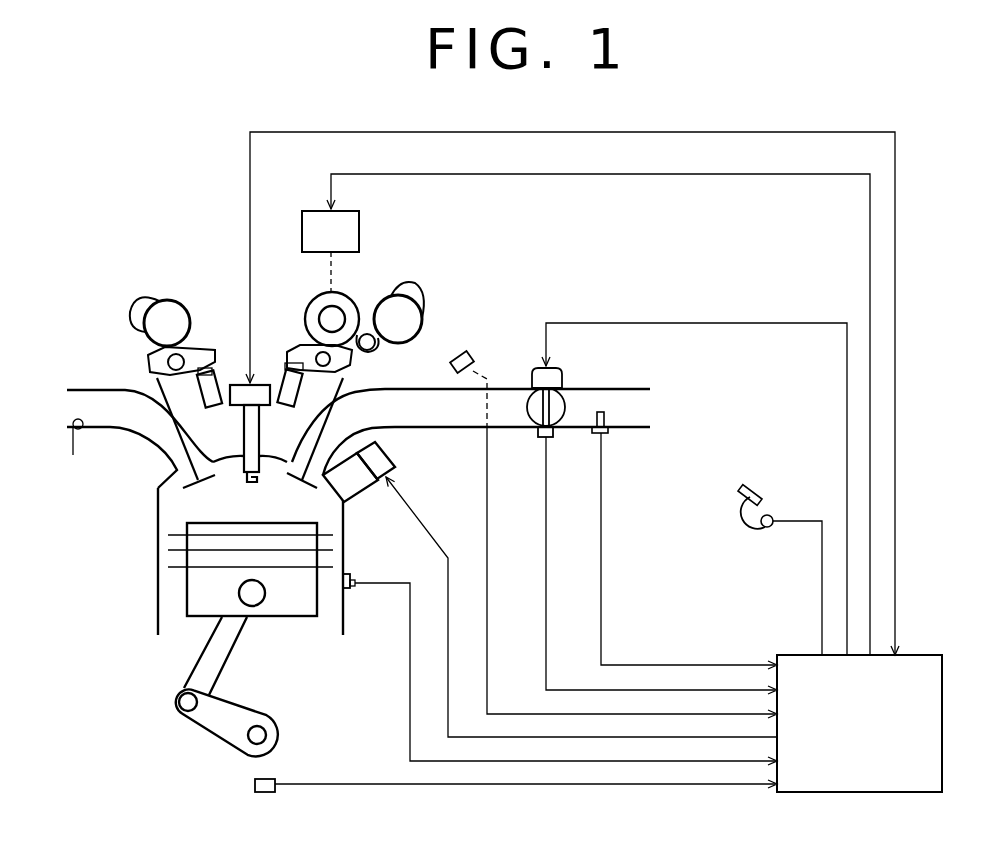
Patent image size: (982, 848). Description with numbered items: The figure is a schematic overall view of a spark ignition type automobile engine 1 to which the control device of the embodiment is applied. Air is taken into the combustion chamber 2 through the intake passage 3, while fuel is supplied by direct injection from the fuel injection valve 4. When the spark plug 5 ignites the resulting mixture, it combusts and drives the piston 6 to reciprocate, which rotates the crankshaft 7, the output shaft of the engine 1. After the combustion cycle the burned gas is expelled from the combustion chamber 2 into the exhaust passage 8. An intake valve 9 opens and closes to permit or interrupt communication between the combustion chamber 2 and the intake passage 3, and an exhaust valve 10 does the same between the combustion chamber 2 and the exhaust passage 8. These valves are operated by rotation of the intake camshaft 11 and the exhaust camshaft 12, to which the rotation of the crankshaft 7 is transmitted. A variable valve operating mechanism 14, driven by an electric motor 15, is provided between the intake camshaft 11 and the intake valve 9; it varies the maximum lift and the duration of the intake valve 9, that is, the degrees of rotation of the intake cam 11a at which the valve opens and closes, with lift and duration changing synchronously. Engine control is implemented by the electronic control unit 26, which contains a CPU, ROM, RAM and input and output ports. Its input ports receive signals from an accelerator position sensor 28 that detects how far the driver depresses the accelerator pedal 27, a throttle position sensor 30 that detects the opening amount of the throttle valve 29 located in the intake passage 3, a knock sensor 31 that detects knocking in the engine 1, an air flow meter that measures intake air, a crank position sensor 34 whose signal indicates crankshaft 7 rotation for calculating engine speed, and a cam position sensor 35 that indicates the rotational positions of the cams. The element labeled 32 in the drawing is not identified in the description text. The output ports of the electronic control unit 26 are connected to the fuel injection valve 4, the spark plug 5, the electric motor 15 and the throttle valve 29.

The engine 1 is at (192, 226).
The combustion chamber 2 is at (178, 498).
The intake passage 3 is at (411, 427).
The fuel injection valve 4 is at (380, 481).
The spark plug 5 is at (242, 432).
The piston 6 is at (293, 618).
The crankshaft 7 is at (266, 718).
The exhaust passage 8 is at (74, 452).
The intake valve 9 is at (305, 440).
The exhaust valve 10 is at (183, 450).
The intake camshaft 11 is at (396, 306).
The intake cam 11a is at (412, 285).
The exhaust camshaft 12 is at (157, 333).
The variable valve operating mechanism 14 is at (311, 312).
The electric motor 15 is at (318, 209).
The electronic control unit 26 is at (798, 654).
The accelerator pedal 27 is at (741, 490).
The accelerator position sensor 28 is at (767, 515).
The throttle valve 29 is at (563, 397).
The throttle position sensor 30 is at (552, 437).
The knock sensor 31 is at (348, 588).
The intake air temperature sensor 32 is at (607, 433).
The crank position sensor 34 is at (263, 793).
The cam position sensor 35 is at (472, 354).